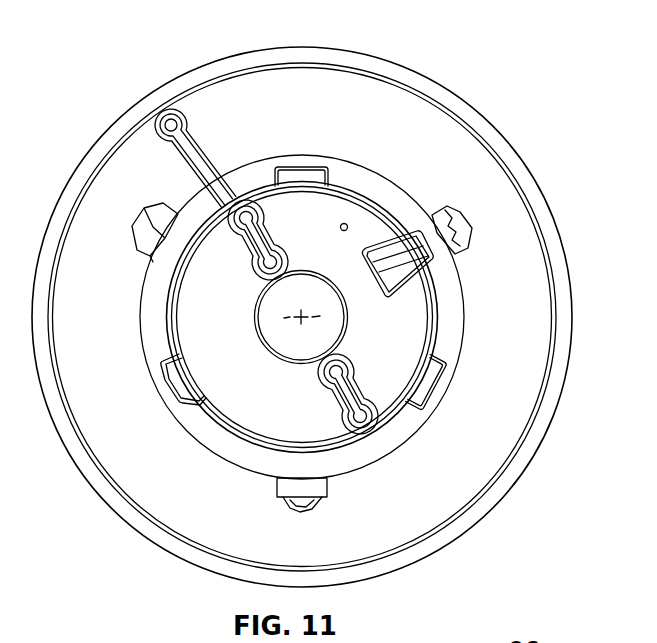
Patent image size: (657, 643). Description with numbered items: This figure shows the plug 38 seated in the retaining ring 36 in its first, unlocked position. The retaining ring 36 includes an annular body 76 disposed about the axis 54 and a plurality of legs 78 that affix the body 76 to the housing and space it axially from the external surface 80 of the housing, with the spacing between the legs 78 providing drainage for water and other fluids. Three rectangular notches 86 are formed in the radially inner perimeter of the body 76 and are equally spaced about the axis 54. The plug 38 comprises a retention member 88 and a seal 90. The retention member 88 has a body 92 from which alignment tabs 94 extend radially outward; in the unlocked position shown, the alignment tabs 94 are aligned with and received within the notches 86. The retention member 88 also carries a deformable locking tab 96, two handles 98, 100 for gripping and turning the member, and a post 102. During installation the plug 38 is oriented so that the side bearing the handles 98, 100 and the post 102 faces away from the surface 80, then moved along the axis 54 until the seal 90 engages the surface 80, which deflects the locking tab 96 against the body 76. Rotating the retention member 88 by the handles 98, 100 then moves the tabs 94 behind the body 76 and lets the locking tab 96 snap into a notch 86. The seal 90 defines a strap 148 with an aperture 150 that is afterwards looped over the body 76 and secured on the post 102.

The retaining ring 36 is at (198, 426).
The plug 38 is at (500, 318).
The axis 54 is at (306, 314).
The body 76 is at (227, 443).
The legs 78 is at (337, 490).
The external surface 80 is at (497, 388).
The notches 86 is at (173, 361).
The retention member 88 is at (207, 327).
The seal 90 is at (258, 313).
The body 92 is at (416, 322).
The alignment tabs 94 is at (302, 178).
The deformable locking tab 96 is at (400, 257).
The handle 98 is at (247, 212).
The handle 100 is at (362, 415).
The post 102 is at (348, 227).
The strap 148 is at (192, 155).
The aperture 150 is at (168, 121).